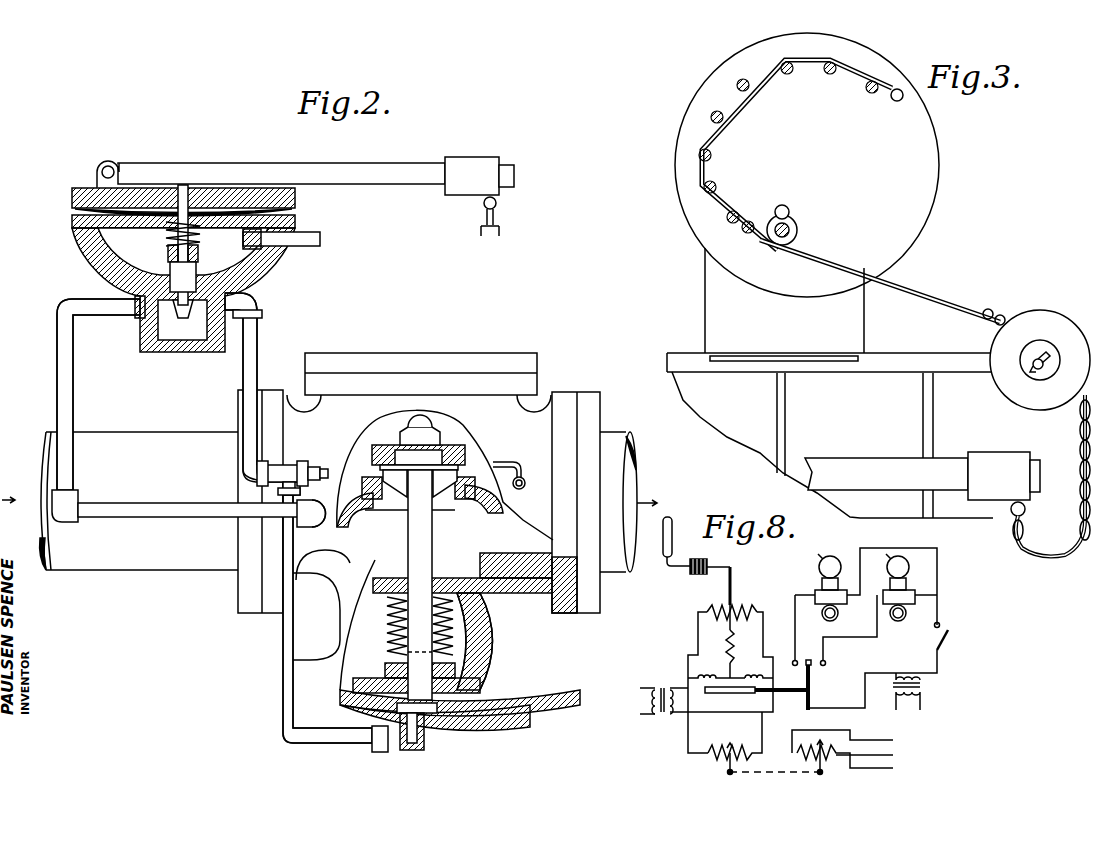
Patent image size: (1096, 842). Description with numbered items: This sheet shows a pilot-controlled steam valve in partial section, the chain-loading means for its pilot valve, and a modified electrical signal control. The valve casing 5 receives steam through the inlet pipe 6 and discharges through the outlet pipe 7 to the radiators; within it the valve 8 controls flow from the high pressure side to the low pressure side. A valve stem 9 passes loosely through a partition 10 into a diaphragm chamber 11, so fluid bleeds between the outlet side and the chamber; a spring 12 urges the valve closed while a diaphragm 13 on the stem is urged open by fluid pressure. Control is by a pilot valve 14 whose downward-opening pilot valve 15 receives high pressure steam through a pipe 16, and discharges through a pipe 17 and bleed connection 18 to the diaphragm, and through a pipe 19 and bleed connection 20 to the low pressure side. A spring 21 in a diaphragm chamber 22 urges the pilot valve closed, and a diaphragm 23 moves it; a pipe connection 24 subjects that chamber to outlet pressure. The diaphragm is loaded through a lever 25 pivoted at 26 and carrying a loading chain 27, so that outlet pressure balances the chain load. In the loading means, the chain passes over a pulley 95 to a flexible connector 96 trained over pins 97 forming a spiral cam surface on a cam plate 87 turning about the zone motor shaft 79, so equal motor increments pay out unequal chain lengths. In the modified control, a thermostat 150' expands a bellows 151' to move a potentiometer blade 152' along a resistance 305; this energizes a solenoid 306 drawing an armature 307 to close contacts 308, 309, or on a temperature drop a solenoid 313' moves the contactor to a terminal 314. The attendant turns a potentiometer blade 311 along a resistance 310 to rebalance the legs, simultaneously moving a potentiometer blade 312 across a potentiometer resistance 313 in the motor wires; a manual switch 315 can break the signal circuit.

In FIG. 2, the valve casing 5 is at (516, 425).
In FIG. 2, the inlet pipe 6 is at (108, 565).
In FIG. 2, the outlet pipe 7 is at (616, 440).
In FIG. 2, the valve 8 is at (455, 445).
In FIG. 2, the valve stem 9 is at (430, 540).
In FIG. 2, the partition 10 is at (471, 580).
In FIG. 2, the diaphragm chamber 11 is at (492, 643).
In FIG. 2, the spring 12 is at (372, 637).
In FIG. 2, the diaphragm 13 is at (505, 703).
In FIG. 2, the pilot valve 14 is at (117, 255).
In FIG. 2, the pilot valve 15 is at (182, 318).
In FIG. 2, the pipe 16 is at (73, 390).
In FIG. 2, the pipe 17 is at (283, 632).
In FIG. 2, the bleed connection 18 is at (415, 748).
In FIG. 2, the pipe 19 is at (312, 470).
In FIG. 2, the bleed connection 20 is at (519, 490).
In FIG. 2, the spring 21 is at (166, 236).
In FIG. 2, the diaphragm chamber 22 is at (100, 226).
In FIG. 2, the diaphragm 23 is at (196, 216).
In FIG. 2, the pipe connection 24 is at (300, 246).
In FIG. 2, the lever 25 is at (373, 170).
In FIG. 3, the lever 25 is at (880, 466).
In FIG. 2, the pivot 26 is at (96, 170).
In FIG. 2, the loading chain 27 is at (498, 229).
In FIG. 3, the loading chain 27 is at (1072, 440).
In FIG. 3, the zone motor shaft 79 is at (790, 214).
In FIG. 3, the cam plate 87 is at (938, 164).
In FIG. 3, the pulley 95 is at (1000, 350).
In FIG. 3, the flexible connector 96 is at (912, 290).
In FIG. 3, the pins 97 is at (760, 241).
In FIG. 8, the thermostat 150' is at (683, 531).
In FIG. 8, the bellows 151' is at (710, 558).
In FIG. 8, the potentiometer blade 152' is at (749, 622).
In FIG. 8, the resistance 305 is at (712, 605).
In FIG. 8, the solenoid 306 is at (698, 676).
In FIG. 8, the armature 307 is at (724, 700).
In FIG. 8, the contact 308 is at (813, 652).
In FIG. 8, the contact 309 is at (794, 660).
In FIG. 8, the resistance 310 is at (727, 744).
In FIG. 8, the potentiometer blade 311 is at (726, 765).
In FIG. 8, the potentiometer blade 312 is at (816, 766).
In FIG. 8, the potentiometer resistance 313 is at (842, 725).
In FIG. 8, the solenoid 313' is at (758, 668).
In FIG. 8, the terminal 314 is at (826, 663).
In FIG. 8, the manual switch 315 is at (946, 640).